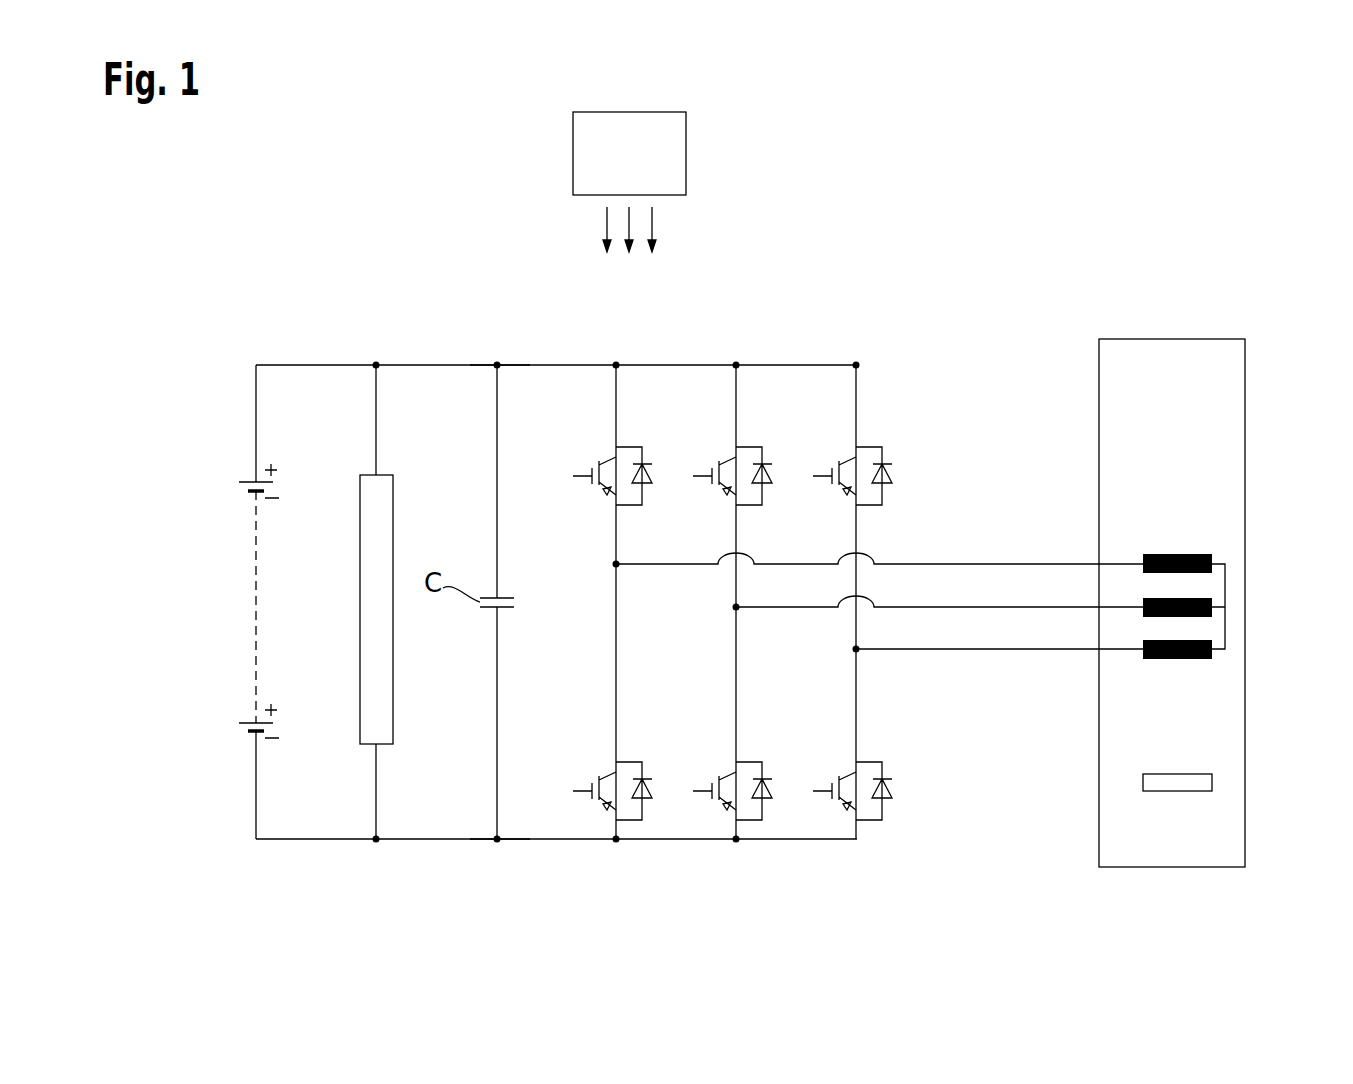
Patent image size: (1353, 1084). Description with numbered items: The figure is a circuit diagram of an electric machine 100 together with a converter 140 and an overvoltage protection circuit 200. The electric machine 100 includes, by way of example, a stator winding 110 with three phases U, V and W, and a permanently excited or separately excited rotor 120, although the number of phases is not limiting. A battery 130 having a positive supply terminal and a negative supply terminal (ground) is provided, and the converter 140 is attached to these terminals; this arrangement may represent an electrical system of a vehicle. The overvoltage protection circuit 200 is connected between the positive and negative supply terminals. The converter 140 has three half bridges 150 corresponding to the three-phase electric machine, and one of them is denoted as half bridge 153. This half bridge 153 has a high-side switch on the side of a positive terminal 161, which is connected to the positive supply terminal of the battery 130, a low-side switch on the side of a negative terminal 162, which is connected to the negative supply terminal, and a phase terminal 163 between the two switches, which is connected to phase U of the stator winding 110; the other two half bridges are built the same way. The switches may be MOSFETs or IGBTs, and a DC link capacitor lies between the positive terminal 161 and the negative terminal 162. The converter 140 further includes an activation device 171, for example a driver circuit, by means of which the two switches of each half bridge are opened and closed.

The electric machine 100 is at (1201, 261).
The stator winding 110 is at (1200, 540).
The rotor 120 is at (1212, 783).
The battery 130 is at (247, 603).
The converter 140 is at (410, 228).
The half bridges 150 is at (903, 327).
The half bridge 153 is at (860, 846).
The positive terminal 161 is at (497, 362).
The negative terminal 162 is at (497, 843).
The phase terminal 163 is at (619, 567).
The activation device 171 is at (686, 150).
The overvoltage protection circuit 200 is at (358, 584).